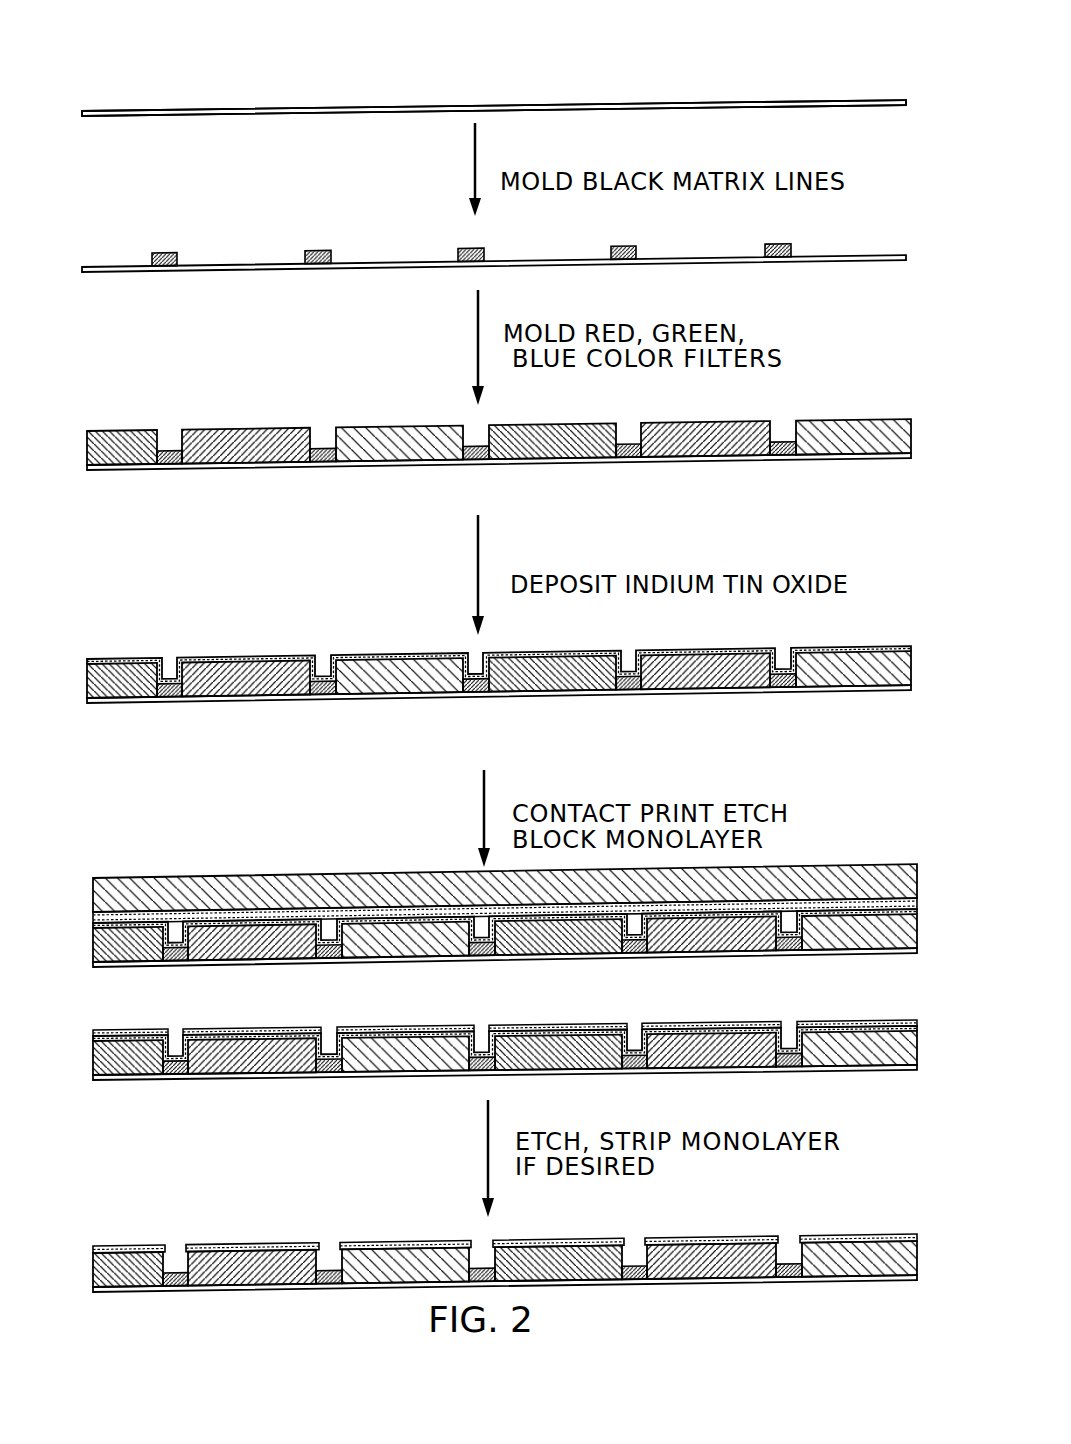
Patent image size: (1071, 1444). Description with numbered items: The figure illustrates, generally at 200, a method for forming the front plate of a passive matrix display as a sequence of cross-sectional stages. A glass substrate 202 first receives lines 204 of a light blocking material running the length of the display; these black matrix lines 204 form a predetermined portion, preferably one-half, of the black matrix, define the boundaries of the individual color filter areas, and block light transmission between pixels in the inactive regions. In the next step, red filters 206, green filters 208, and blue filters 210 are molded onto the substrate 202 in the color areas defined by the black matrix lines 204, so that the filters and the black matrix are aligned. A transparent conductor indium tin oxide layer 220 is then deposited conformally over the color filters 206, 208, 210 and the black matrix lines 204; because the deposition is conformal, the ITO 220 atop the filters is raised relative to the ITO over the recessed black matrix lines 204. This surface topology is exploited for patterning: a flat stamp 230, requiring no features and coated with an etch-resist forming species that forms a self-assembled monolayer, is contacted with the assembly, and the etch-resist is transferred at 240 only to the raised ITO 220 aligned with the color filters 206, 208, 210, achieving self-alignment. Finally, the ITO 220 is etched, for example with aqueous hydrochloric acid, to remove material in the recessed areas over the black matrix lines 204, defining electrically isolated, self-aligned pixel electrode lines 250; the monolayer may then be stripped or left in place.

The method for forming front plate of a passive matrix display 200 is at (556, 62).
The glass substrate 202 is at (737, 101).
The black matrix lines 204 is at (166, 254).
The red filters 206 is at (247, 430).
The green filters 208 is at (396, 428).
The blue filters 210 is at (110, 432).
The indium tin oxide layer 220 is at (835, 650).
The flat stamp 230 is at (91, 896).
The transferred etch-resist 240 is at (128, 1030).
The pixel electrode lines 250 is at (130, 1243).